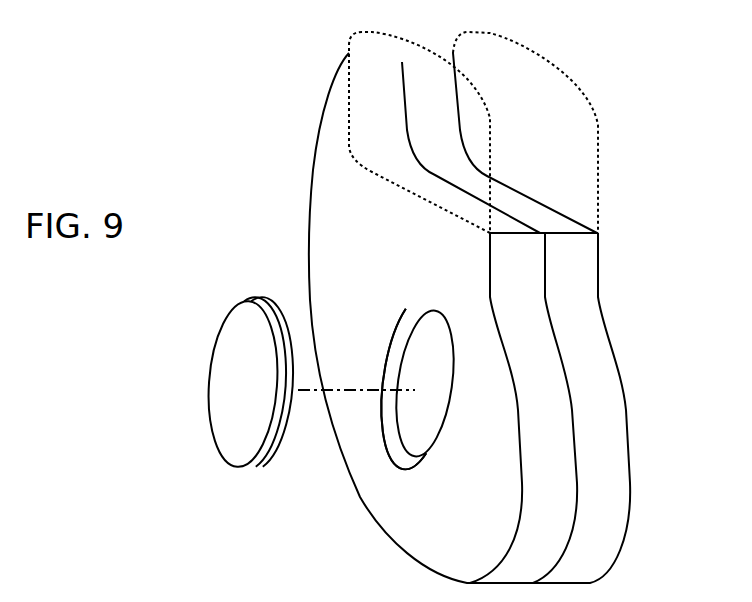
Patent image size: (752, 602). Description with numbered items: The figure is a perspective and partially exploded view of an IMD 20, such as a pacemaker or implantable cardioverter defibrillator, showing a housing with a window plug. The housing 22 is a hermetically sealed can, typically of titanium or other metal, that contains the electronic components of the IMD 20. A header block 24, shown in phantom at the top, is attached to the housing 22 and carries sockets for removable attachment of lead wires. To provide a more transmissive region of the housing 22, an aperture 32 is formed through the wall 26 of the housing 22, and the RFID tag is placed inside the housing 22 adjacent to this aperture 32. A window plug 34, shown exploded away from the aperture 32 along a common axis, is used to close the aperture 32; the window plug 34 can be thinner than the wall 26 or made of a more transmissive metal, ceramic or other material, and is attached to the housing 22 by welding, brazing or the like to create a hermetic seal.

The IMD 20 is at (278, 117).
The housing 22 is at (547, 318).
The header block 24 is at (475, 127).
The wall 26 is at (347, 345).
The aperture 32 is at (361, 421).
The window plug 34 is at (278, 383).